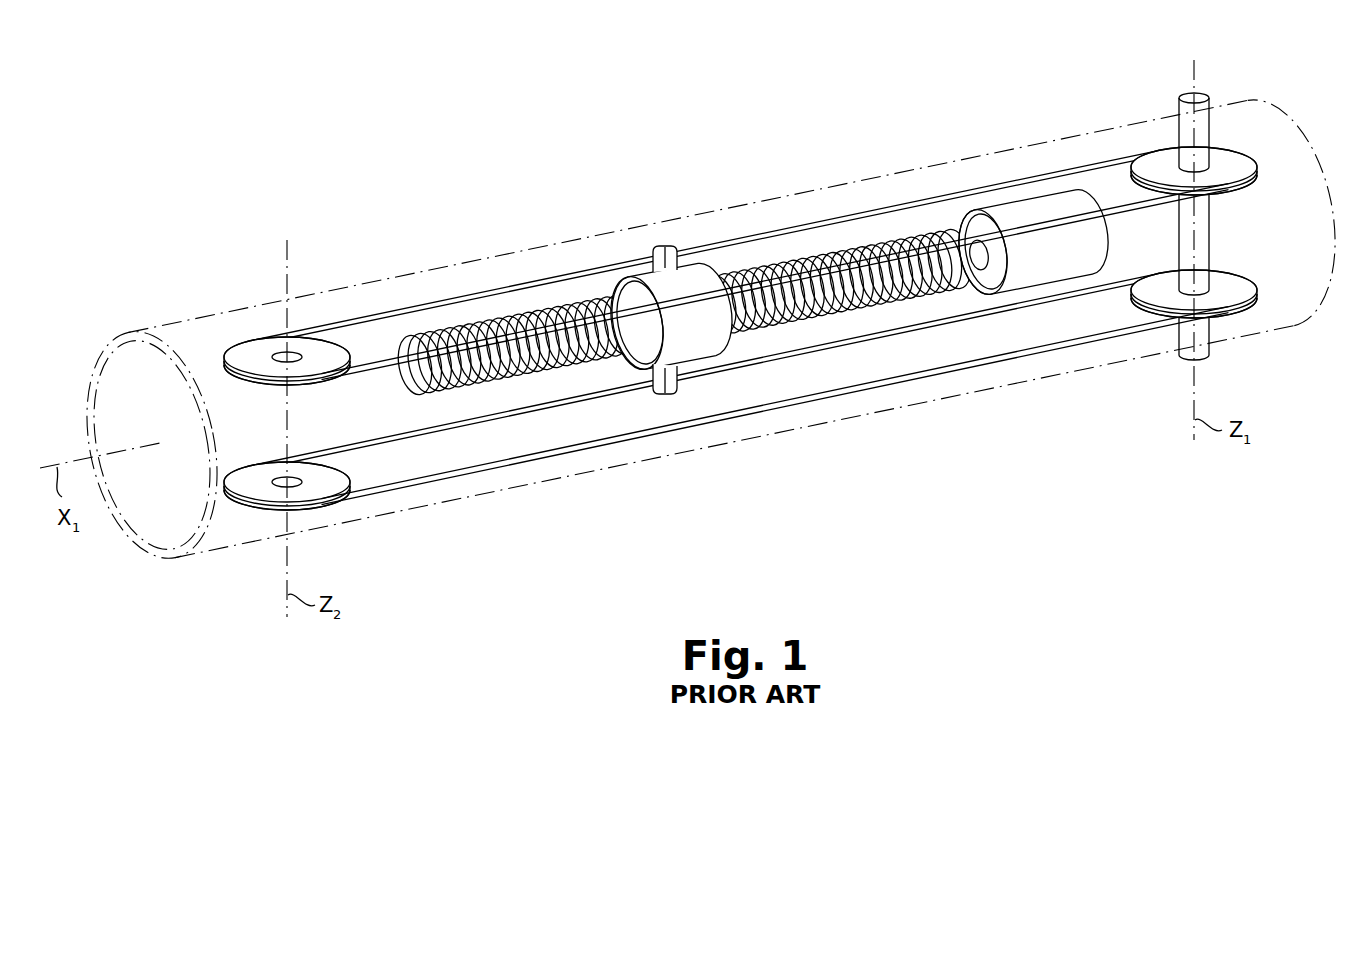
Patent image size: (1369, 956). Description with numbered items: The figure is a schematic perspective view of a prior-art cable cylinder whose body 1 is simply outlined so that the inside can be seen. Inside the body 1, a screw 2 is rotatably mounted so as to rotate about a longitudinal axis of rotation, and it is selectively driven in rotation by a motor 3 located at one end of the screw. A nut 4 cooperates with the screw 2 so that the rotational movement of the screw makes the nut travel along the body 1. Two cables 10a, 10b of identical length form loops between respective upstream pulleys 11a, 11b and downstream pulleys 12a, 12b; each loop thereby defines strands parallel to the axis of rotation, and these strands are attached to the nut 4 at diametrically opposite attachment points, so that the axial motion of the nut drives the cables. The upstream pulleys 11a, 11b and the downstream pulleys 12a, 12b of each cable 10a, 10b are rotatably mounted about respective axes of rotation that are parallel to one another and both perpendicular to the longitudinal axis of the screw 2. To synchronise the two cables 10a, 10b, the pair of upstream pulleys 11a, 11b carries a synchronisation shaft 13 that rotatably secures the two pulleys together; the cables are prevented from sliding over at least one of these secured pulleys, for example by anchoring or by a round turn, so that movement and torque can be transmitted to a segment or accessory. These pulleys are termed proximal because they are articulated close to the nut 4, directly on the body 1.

The body 1 is at (687, 210).
The screw 2 is at (503, 323).
The motor 3 is at (1020, 210).
The nut 4 is at (693, 347).
The cable 10a is at (588, 273).
The cable 10b is at (550, 460).
The upstream pulley 11a is at (1232, 162).
The upstream pulley 11b is at (1240, 297).
The downstream pulley 12a is at (247, 348).
The downstream pulley 12b is at (263, 493).
The synchronisation shaft 13 is at (1203, 123).